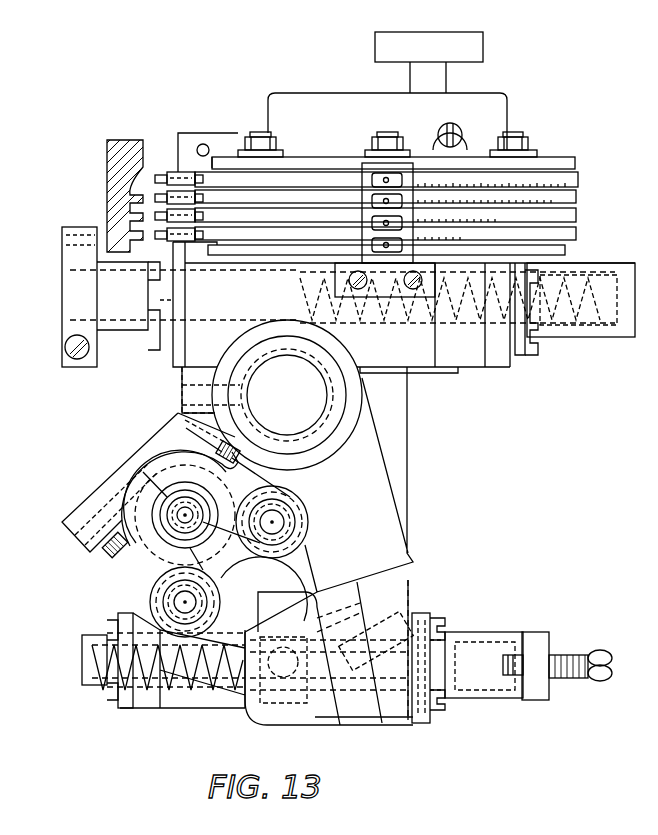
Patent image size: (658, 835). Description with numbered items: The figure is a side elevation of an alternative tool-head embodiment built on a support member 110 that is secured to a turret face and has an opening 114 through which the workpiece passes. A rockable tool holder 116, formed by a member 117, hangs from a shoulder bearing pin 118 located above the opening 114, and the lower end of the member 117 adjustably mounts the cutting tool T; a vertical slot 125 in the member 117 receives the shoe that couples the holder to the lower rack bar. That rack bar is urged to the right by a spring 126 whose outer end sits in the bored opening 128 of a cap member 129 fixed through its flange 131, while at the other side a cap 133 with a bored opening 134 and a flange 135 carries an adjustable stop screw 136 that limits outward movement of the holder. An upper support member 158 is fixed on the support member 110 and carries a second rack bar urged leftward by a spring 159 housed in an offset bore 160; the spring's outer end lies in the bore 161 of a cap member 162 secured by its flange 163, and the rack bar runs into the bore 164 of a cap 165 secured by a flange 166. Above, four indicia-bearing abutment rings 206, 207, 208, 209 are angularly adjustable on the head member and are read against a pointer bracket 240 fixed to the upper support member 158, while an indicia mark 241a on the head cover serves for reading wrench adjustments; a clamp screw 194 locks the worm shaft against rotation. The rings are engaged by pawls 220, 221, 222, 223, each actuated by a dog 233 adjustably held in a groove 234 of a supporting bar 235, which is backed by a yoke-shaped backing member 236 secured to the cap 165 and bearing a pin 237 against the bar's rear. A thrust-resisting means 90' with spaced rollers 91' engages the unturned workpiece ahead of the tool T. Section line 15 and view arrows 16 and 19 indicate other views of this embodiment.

The section line 15- 15 is at (366, 80).
The view arrow 16 is at (30, 298).
The view arrow 19 is at (36, 250).
The clamp screw 194 is at (478, 52).
The pointer bracket 240 is at (412, 170).
The indicia mark 241a is at (456, 113).
The abutment ring 206 is at (578, 175).
The abutment ring 207 is at (577, 195).
The abutment ring 208 is at (577, 215).
The abutment ring 209 is at (577, 234).
The pawl 220 is at (165, 175).
The pawl 221 is at (160, 198).
The pawl 222 is at (160, 216).
The pawl 223 is at (121, 246).
The dog 233 is at (148, 142).
The groove 234 is at (128, 194).
The supporting bar 235 is at (107, 152).
The backing member 236 is at (97, 296).
The pin 237 is at (62, 237).
The upper support member 158 is at (452, 370).
The spring 159 is at (598, 292).
The bore 160 is at (287, 312).
The bore 161 is at (565, 290).
The cap member 162 is at (605, 342).
The flange 163 is at (523, 355).
The bore 164 is at (113, 332).
The cap 165 is at (60, 335).
The flange 166 is at (166, 350).
The shoulder bearing pin 118 is at (310, 400).
The member 117 is at (380, 468).
The support member 110 is at (410, 490).
The tool holder 116 is at (398, 563).
The thrust-resisting means 90' is at (161, 491).
The rollers 91' is at (228, 556).
The opening 114 is at (240, 562).
The cutting tool T is at (294, 602).
The flange 131 is at (120, 613).
The cap member 129 is at (90, 635).
The bored opening 128 is at (88, 648).
The spring 126 is at (84, 669).
The vertical slot 125 is at (252, 722).
The bored opening 134 is at (498, 640).
The cap 133 is at (540, 632).
The flange 135 is at (425, 722).
The adjustable stop screw 136 is at (612, 636).